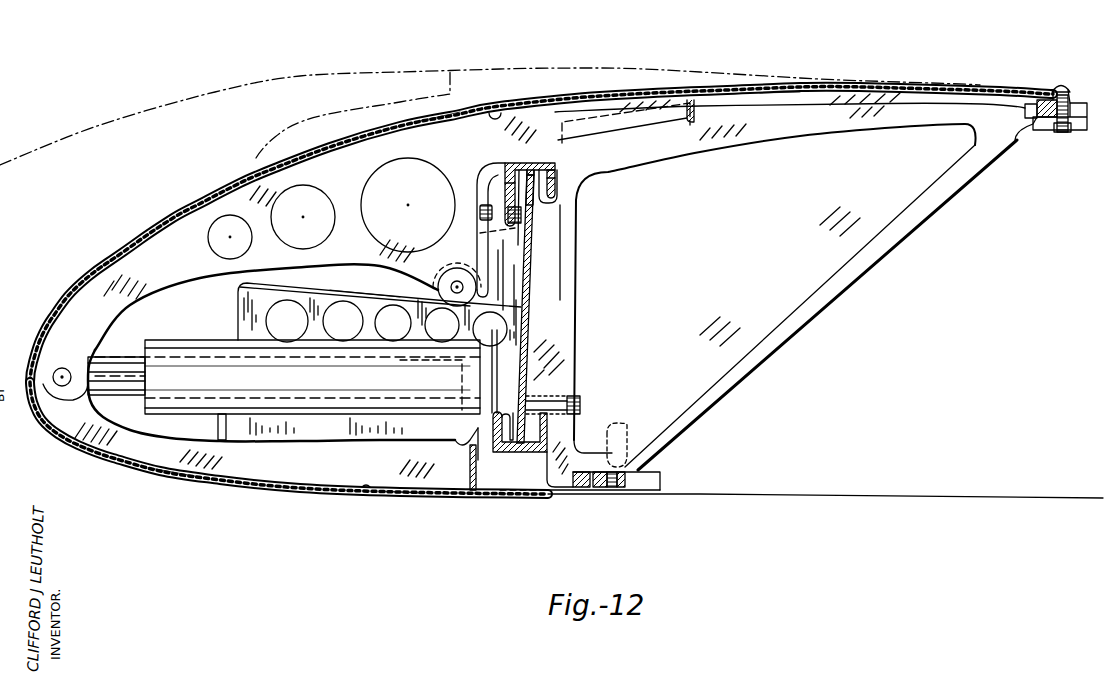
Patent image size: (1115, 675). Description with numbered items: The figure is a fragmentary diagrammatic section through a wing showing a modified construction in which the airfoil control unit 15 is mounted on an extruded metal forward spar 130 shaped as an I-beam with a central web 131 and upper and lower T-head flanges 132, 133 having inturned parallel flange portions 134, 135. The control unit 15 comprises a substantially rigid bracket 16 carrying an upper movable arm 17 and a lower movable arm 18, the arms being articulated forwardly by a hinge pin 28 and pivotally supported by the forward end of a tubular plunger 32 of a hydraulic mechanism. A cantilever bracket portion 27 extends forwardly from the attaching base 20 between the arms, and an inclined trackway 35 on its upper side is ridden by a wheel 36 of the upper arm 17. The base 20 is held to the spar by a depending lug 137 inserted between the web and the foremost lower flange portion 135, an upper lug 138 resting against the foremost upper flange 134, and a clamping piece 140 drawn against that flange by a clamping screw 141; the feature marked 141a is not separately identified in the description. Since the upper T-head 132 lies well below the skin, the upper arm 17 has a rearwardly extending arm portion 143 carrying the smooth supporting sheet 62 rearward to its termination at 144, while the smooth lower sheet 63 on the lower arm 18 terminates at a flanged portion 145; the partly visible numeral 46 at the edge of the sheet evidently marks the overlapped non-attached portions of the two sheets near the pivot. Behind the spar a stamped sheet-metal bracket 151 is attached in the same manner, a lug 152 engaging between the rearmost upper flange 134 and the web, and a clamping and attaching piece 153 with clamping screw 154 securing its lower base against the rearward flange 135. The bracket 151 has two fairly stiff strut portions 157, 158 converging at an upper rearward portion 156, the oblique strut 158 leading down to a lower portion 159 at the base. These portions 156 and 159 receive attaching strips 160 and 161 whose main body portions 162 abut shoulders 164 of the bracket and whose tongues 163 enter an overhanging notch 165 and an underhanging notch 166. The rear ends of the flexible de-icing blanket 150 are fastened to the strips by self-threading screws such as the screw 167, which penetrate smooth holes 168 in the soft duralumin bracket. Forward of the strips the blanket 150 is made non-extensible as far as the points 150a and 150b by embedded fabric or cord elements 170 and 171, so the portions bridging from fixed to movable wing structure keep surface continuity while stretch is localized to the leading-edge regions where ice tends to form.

The airfoil control unit 15 is at (182, 486).
The bracket member 16 is at (520, 310).
The upper movable arm member 17 is at (352, 253).
The lower movable arm member 18 is at (338, 471).
The attaching base 20 is at (510, 265).
The cantilever bracket portion 27 is at (240, 312).
The hinge pin 28 is at (55, 371).
The plunger 32 is at (128, 362).
The inclined trackway 35 is at (364, 298).
The wheel 36 is at (438, 293).
The hinge bracket 46 is at (43, 384).
The supporting sheet 62 is at (494, 111).
The lower sheet 63 is at (364, 494).
The forward spar 130 is at (530, 285).
The central web 131 is at (526, 333).
The upper T-head flange 132 is at (545, 162).
The lower T-head flange 133 is at (535, 488).
The upper inturned flange portion 134 is at (500, 170).
The lower inturned flange portion 135 is at (547, 430).
The depending lug 137 is at (480, 413).
The upper lug 138 is at (505, 184).
The clamping piece 140 is at (531, 195).
The clamping screw 141 is at (480, 211).
The bolt axis 141a is at (480, 233).
The rearwardly extending arm portion 143 is at (352, 112).
The sheet termination 144 is at (697, 116).
The flanged portion 145 is at (470, 491).
The flexible blanket 150 is at (214, 92).
The upper non-extensible limit point 150a is at (437, 124).
The lower non-extensible limit point 150b is at (396, 496).
The blanket bracket 151 is at (793, 136).
The lug 152 is at (553, 172).
The clamping and attaching piece 153 is at (548, 405).
The clamping screw 154 is at (582, 402).
The upper rearward bracket portion 156 is at (1020, 138).
The upper strut portion 157 is at (853, 106).
The oblique strut portion 158 is at (933, 212).
The lower bracket portion 159 is at (585, 495).
The upper attaching strip 160 is at (1080, 124).
The lower attaching strip 161 is at (632, 490).
The strip main body portion 162 is at (1071, 103).
The strip tongue 163 is at (1042, 100).
The shoulder 164 is at (1060, 90).
The overhanging notch 165 is at (1025, 110).
The underhanging notch 166 is at (575, 460).
The screw 167 is at (1066, 86).
The smooth hole 168 is at (627, 436).
The upper embedded fabric or cord element 170 is at (782, 93).
The lower embedded fabric or cord element 171 is at (545, 490).